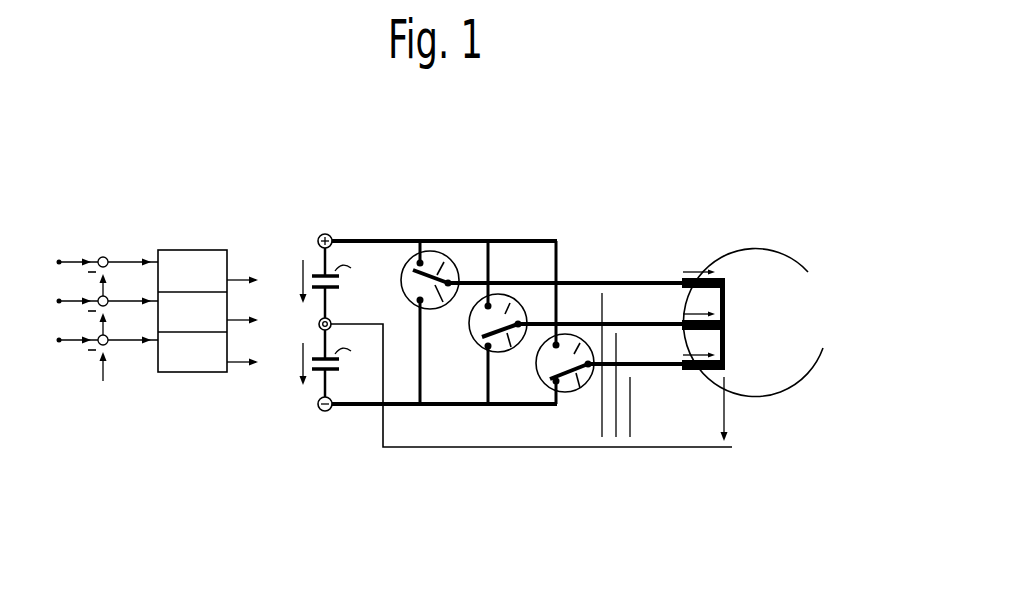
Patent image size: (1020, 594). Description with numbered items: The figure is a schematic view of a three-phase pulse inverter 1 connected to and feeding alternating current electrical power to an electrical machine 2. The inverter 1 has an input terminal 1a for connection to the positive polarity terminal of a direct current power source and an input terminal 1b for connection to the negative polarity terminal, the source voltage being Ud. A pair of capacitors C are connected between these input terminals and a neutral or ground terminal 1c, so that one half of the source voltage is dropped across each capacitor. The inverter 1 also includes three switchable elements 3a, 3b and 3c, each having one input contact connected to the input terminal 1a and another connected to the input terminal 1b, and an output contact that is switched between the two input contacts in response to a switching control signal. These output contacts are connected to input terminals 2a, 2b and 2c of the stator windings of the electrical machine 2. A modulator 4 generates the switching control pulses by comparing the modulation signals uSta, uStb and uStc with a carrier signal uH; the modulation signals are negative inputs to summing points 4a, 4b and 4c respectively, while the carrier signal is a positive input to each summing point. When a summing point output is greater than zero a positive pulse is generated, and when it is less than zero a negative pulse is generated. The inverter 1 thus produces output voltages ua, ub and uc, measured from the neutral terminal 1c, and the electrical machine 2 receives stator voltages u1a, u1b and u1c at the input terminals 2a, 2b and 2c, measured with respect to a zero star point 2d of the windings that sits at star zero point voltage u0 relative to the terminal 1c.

The three-phase pulse inverter 1 is at (438, 217).
The input terminal 1a is at (318, 236).
The input terminal 1b is at (320, 411).
The neutral or ground terminal 1c is at (318, 323).
The electrical machine 2 is at (740, 220).
The input terminal 2a is at (683, 277).
The input terminal 2b is at (682, 321).
The input terminal 2c is at (690, 372).
The zero star point 2d is at (727, 327).
The switchable element 3a is at (455, 258).
The switchable element 3b is at (512, 352).
The switchable element 3c is at (578, 393).
The modulator 4 is at (190, 221).
The summing point 4a is at (103, 256).
The summing point 4b is at (100, 298).
The summing point 4c is at (108, 343).